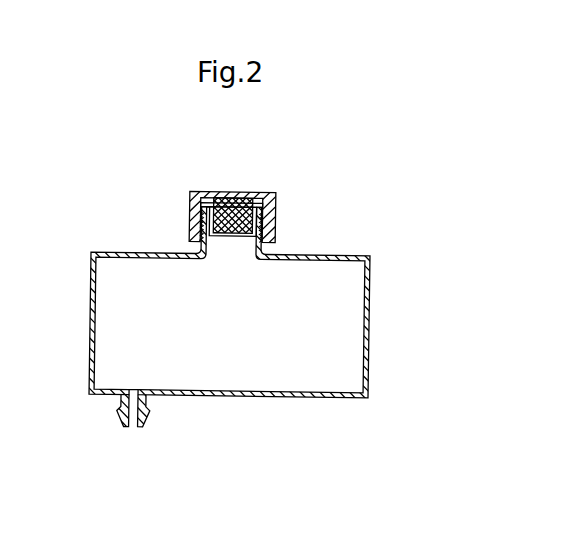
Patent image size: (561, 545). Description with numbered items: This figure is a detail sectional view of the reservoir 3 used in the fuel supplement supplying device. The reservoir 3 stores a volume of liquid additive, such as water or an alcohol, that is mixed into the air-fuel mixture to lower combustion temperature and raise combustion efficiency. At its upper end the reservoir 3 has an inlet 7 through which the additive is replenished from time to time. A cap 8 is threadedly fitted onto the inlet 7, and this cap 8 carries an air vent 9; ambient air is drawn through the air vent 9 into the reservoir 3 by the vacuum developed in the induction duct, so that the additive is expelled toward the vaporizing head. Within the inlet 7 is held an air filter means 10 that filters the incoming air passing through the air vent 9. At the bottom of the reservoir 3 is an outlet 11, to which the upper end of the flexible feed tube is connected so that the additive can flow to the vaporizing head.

The reservoir 3 is at (370, 292).
The inlet 7 is at (243, 242).
The cap 8 is at (273, 197).
The air vent 9 is at (239, 202).
The air filter means 10 is at (199, 209).
The outlet 11 is at (122, 421).